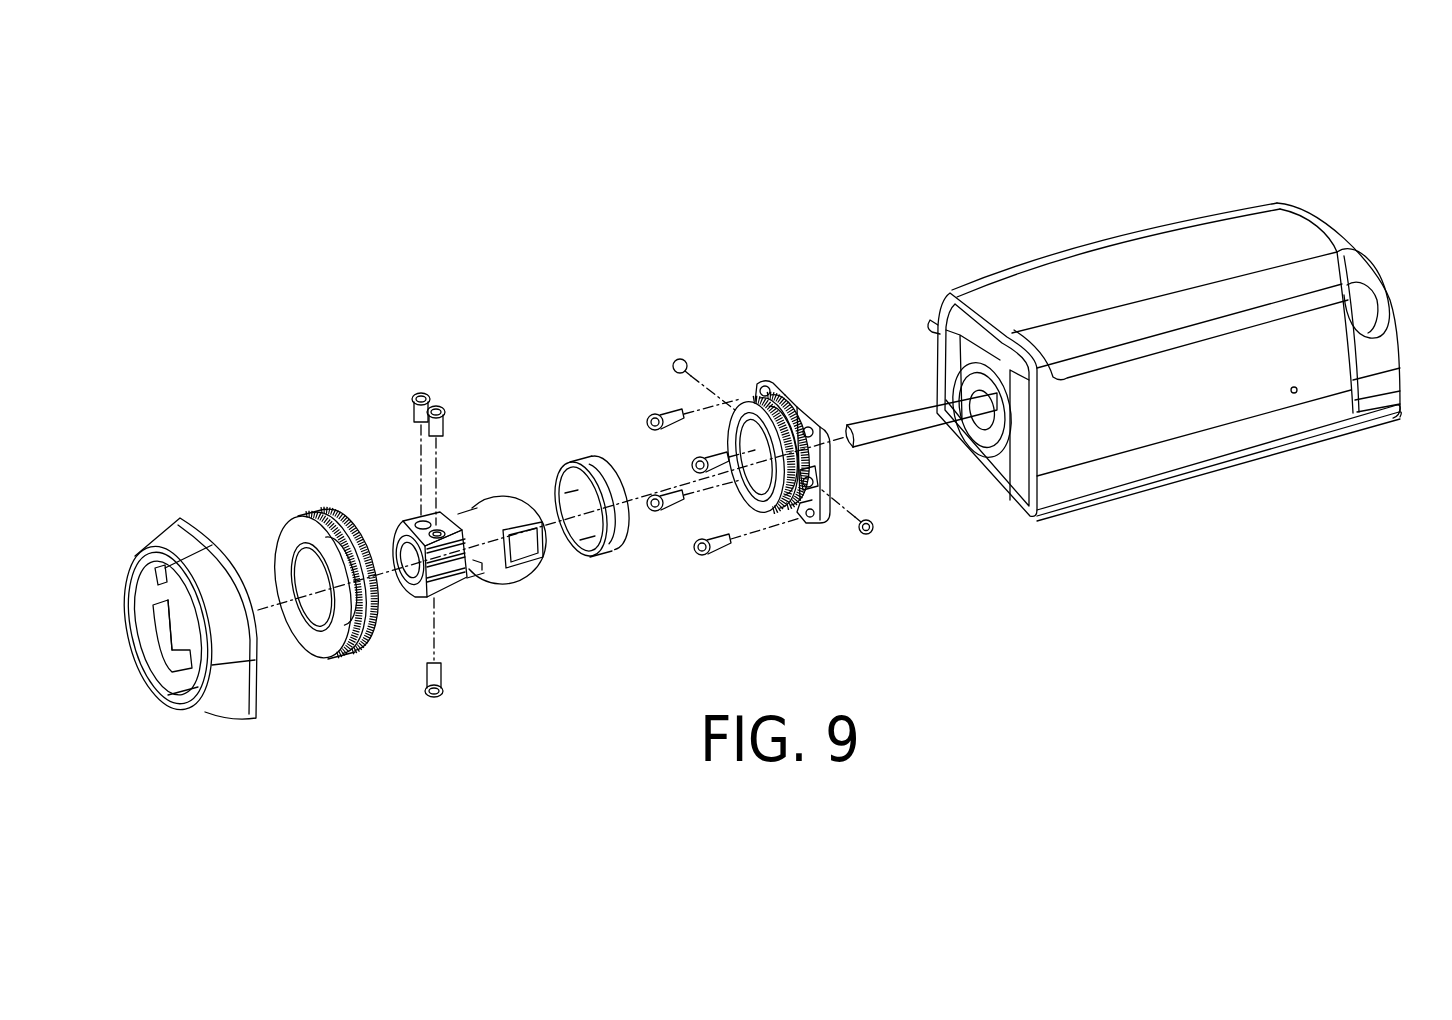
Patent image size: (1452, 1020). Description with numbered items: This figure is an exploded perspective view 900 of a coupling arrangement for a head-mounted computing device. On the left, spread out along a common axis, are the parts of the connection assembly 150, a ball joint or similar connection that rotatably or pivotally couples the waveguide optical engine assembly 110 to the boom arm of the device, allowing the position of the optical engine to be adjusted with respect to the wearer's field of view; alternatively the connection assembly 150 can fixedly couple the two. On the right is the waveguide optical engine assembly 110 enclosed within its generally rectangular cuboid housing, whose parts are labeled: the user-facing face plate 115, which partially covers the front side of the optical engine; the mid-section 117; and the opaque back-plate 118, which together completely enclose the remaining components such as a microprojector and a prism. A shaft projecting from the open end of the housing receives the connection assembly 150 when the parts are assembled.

The exploded perspective view 900 is at (224, 140).
The connection assembly 150 is at (764, 255).
The waveguide optical engine assembly 110 is at (1380, 258).
The opaque back-plate 118 is at (1165, 254).
The mid-section 117 is at (1295, 362).
The face plate 115 is at (1398, 412).